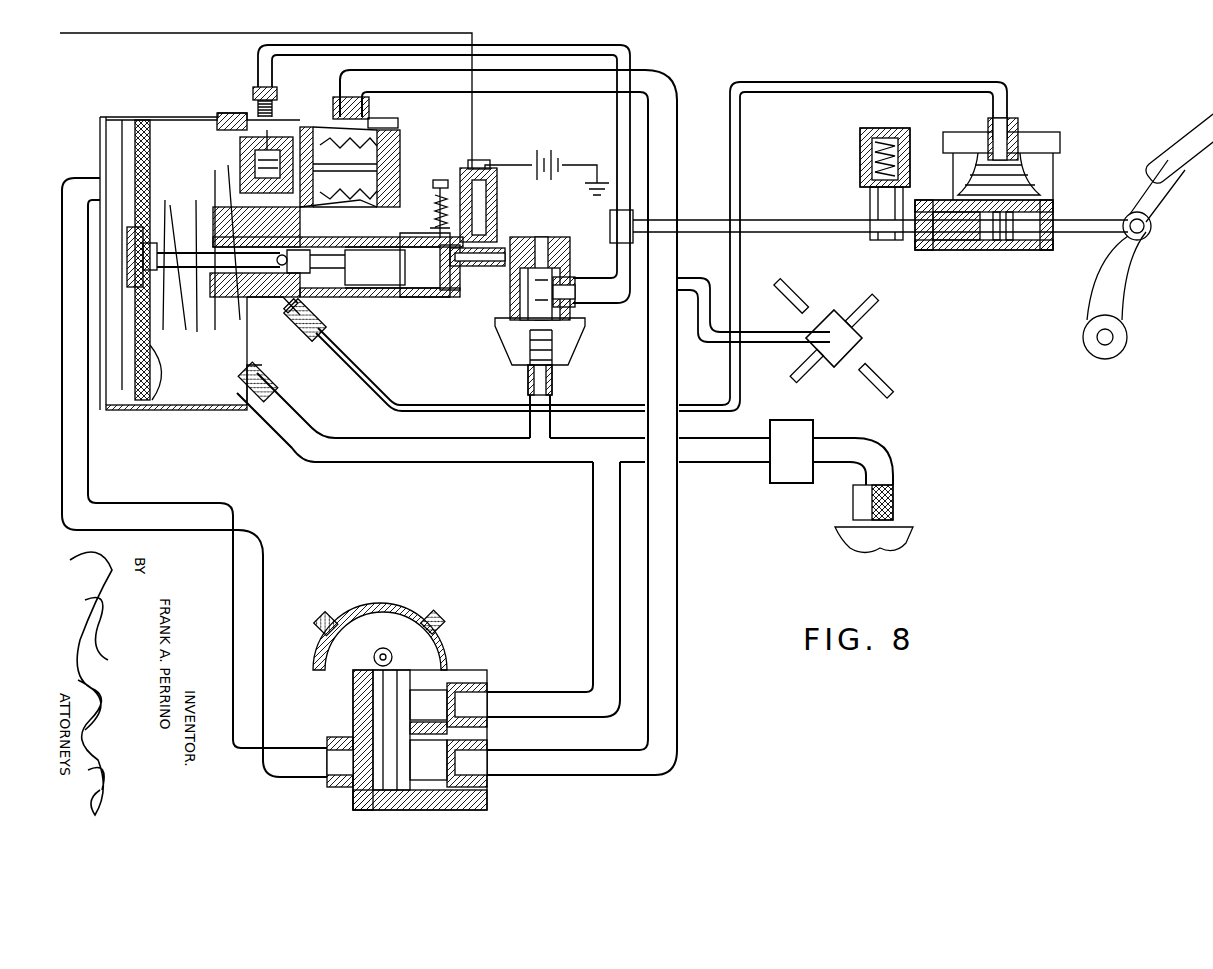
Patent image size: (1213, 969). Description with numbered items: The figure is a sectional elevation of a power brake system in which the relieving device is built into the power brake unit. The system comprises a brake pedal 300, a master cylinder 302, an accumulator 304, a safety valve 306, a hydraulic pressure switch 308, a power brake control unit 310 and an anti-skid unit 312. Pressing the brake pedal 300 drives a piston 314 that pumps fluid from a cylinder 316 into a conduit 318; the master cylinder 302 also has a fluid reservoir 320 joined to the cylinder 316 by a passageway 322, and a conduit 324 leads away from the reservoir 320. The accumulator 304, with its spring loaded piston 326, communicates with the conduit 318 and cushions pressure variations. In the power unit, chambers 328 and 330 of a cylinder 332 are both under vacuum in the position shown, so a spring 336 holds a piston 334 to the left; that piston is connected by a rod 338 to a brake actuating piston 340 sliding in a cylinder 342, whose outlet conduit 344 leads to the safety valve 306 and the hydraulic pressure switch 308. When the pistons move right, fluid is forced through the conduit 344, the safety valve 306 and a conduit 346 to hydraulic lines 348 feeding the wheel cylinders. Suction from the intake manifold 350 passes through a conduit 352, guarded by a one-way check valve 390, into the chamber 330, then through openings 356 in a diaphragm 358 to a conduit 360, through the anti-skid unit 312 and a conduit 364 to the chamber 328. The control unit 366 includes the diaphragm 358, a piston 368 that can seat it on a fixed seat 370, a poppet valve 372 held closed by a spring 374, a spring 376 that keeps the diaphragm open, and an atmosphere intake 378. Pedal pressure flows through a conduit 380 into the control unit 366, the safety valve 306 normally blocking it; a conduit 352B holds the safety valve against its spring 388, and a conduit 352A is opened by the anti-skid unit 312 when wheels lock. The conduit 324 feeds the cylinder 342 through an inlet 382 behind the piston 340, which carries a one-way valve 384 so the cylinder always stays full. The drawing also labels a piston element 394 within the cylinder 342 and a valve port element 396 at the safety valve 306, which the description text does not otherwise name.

The brake pedal 300 is at (1173, 118).
The master cylinder 302 is at (1046, 118).
The accumulator 304 is at (858, 175).
The safety valve 306 is at (497, 309).
The hydraulic pressure switch 308 is at (484, 158).
The power brake control unit 310 is at (166, 72).
The anti-skid unit 312 is at (340, 598).
The piston 314 is at (1000, 222).
The cylinder 316 is at (935, 258).
The conduit 318 is at (791, 233).
The fluid reservoir 320 is at (1022, 182).
The passageway 322 is at (985, 216).
The conduit 324 is at (952, 82).
The spring loaded piston 326 is at (860, 153).
The chamber 328 is at (110, 125).
The chamber 330 is at (172, 122).
The cylinder 332 is at (187, 410).
The piston 334 is at (155, 409).
The spring 336 is at (205, 182).
The rod 338 is at (201, 260).
The brake actuating piston 340 is at (356, 300).
The cylinder 342 is at (395, 275).
The outlet conduit 344 is at (495, 255).
The conduit 346 is at (689, 276).
The hydraulic lines 348 is at (870, 300).
The intake manifold 350 is at (910, 540).
The conduit 352 is at (395, 462).
The conduit 352A is at (596, 518).
The conduit 352B is at (560, 395).
The openings 356 is at (290, 128).
The diaphragm 358 is at (307, 130).
The conduit 360 is at (540, 70).
The conduit 364 is at (186, 508).
The control unit 366 is at (376, 126).
The piston 368 is at (240, 160).
The fixed seat 370 is at (365, 196).
The poppet valve 372 is at (392, 140).
The spring 374 is at (395, 160).
The spring 376 is at (384, 124).
The atmosphere intake 378 is at (442, 179).
The conduit 380 is at (630, 143).
The inlet 382 is at (292, 340).
The one-way valve 384 is at (255, 246).
The spring 388 is at (572, 345).
The one-way check valve 390 is at (800, 432).
The piston 394 is at (347, 258).
The valve port 396 is at (572, 258).